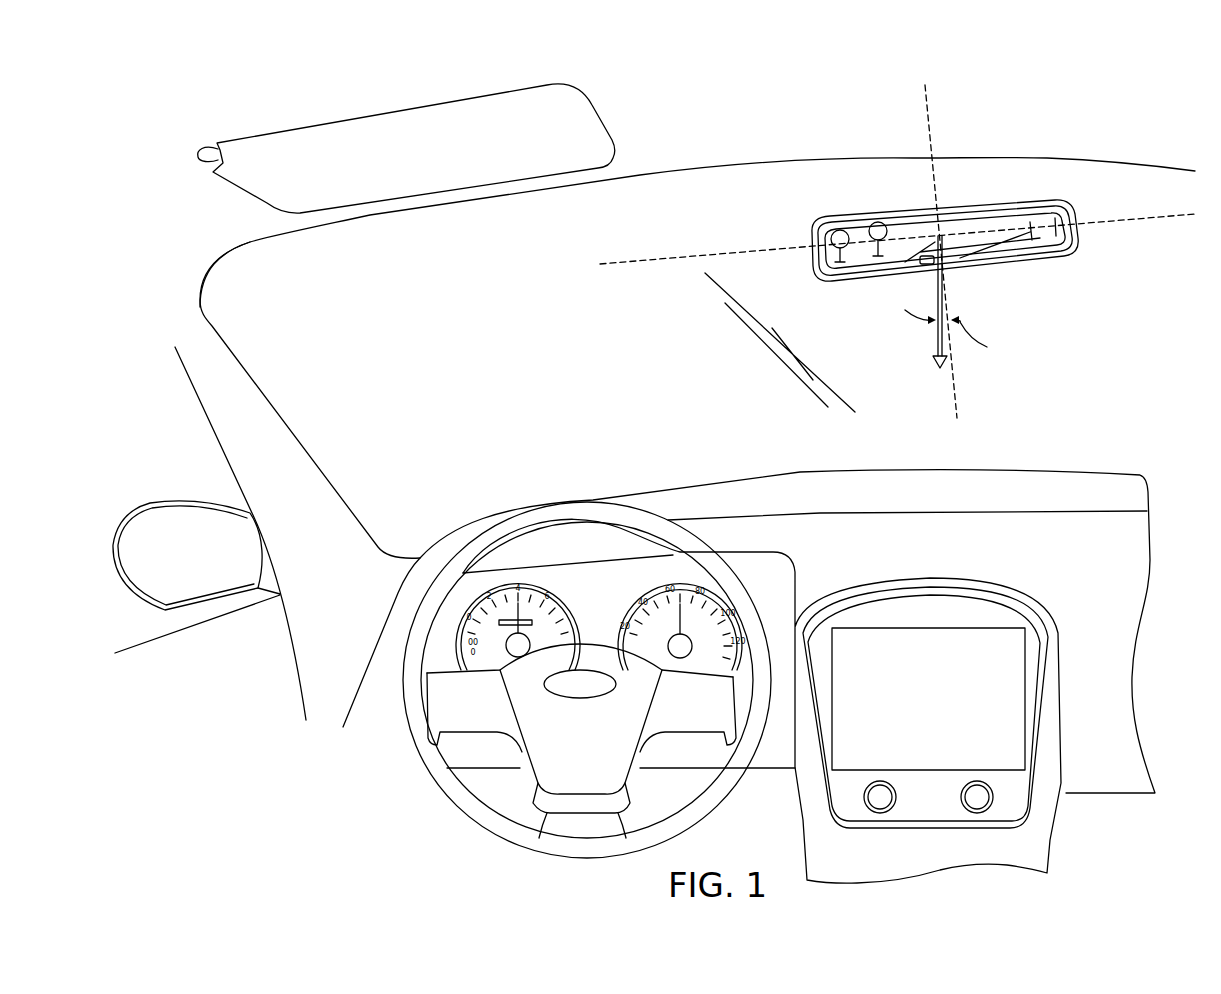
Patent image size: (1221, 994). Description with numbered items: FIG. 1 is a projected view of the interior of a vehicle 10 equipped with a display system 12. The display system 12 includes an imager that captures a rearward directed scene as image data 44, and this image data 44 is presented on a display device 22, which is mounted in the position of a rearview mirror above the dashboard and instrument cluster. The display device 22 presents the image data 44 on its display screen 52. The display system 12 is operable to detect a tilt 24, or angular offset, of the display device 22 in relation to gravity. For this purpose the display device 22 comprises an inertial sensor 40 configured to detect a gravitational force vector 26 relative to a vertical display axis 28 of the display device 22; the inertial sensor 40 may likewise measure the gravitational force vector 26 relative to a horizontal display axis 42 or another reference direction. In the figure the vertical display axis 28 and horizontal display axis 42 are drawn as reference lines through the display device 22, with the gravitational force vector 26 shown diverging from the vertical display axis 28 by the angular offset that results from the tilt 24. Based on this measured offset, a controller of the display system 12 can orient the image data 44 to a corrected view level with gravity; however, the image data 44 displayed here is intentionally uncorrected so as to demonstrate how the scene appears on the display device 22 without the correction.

The vehicle 10 is at (220, 107).
The display system 12 is at (1080, 116).
The display device 22 is at (860, 222).
The tilt 24 is at (972, 302).
The gravitational force vector 26 is at (936, 298).
The vertical display axis 28 is at (956, 394).
The inertial sensor 40 is at (929, 204).
The horizontal display axis 42 is at (1110, 228).
The image data 44 is at (967, 222).
The display screen 52 is at (818, 226).